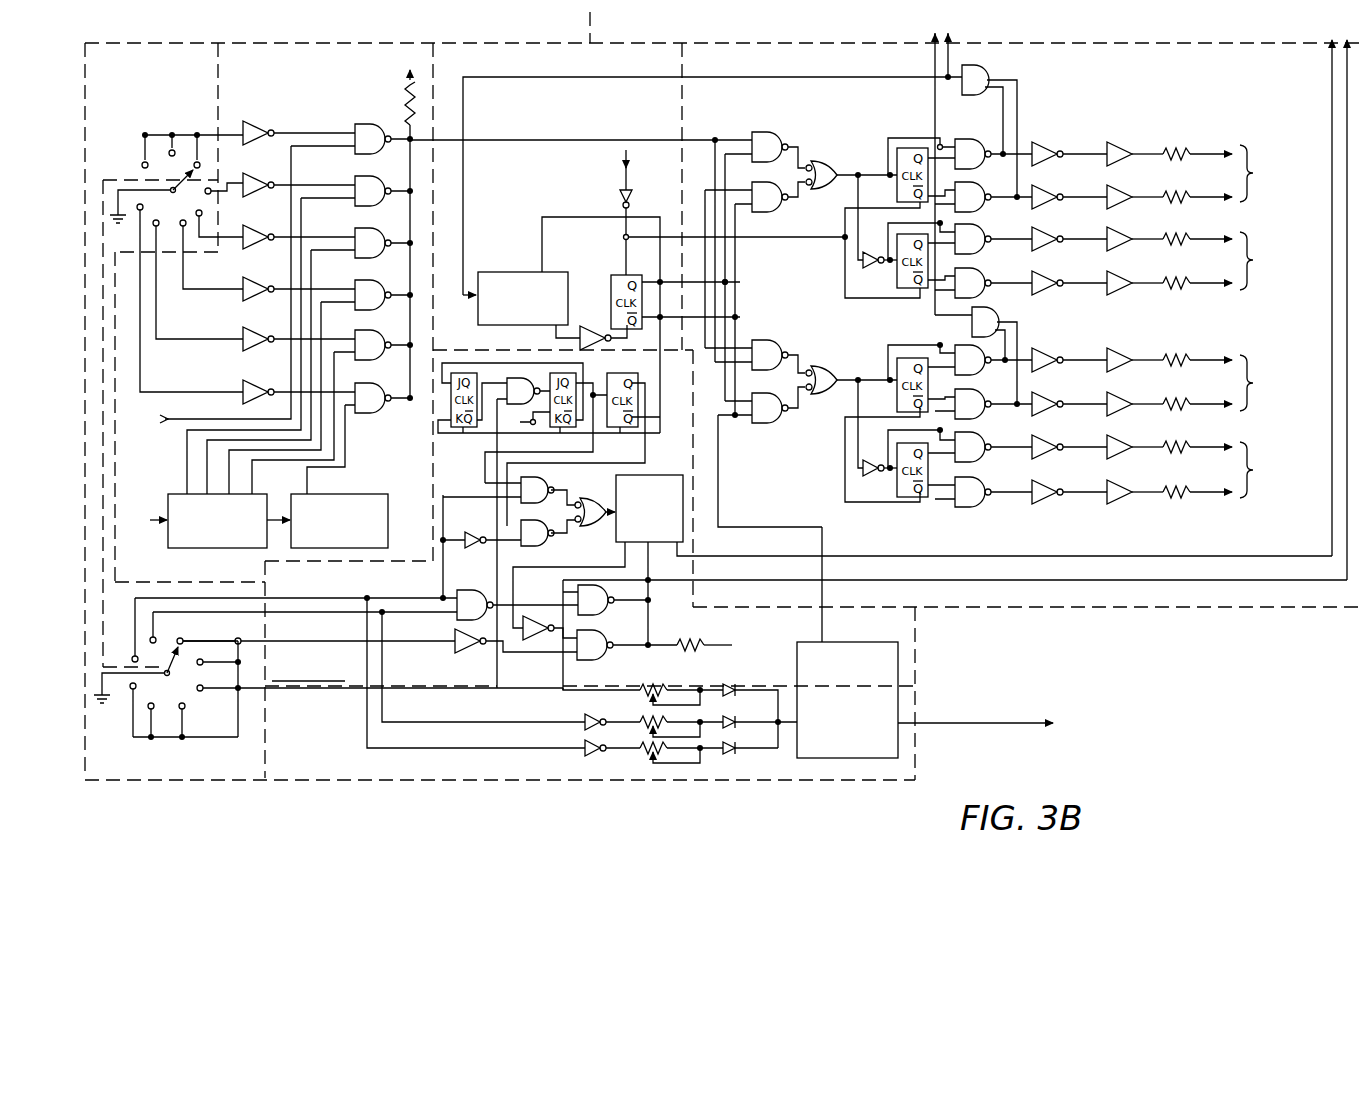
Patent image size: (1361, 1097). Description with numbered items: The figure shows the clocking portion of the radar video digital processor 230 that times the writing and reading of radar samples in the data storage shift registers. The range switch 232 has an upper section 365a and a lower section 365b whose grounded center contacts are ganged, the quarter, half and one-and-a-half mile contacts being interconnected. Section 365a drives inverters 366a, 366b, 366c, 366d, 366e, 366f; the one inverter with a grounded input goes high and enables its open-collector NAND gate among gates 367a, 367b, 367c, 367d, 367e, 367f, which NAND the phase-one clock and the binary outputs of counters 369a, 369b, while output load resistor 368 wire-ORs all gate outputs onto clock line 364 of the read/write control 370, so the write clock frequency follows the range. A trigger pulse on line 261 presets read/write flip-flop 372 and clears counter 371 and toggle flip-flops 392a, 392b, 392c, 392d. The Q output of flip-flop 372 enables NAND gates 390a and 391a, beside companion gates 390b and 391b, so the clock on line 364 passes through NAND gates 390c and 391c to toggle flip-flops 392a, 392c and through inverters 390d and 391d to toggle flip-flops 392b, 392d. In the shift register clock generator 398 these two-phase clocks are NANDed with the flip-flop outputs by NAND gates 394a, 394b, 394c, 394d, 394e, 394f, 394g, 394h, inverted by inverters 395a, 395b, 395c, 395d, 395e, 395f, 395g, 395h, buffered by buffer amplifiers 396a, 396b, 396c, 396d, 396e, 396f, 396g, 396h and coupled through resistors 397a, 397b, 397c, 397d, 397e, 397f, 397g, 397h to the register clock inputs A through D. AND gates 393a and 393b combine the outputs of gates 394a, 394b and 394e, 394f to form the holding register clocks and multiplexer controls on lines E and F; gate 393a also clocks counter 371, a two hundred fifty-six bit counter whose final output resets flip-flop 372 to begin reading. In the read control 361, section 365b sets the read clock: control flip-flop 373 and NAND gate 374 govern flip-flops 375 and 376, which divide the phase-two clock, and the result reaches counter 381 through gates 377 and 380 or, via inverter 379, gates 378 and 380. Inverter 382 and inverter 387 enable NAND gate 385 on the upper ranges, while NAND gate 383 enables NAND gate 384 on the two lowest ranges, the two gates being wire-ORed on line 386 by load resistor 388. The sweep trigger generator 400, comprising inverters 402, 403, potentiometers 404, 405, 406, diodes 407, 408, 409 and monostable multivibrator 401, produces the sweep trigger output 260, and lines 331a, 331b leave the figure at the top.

The range switch 232 is at (150, 785).
The radar video digital processor 230 is at (655, 783).
The read control 361 is at (590, 666).
The sweep trigger generator 400 is at (312, 776).
The upper section of range switch 365a is at (145, 152).
The lower section of range switch 365b is at (121, 704).
The inverter 366a is at (262, 124).
The inverter 366b is at (266, 164).
The inverter 366c is at (266, 219).
The inverter 366d is at (266, 270).
The inverter 366e is at (266, 322).
The inverter 366f is at (266, 375).
The NAND gate 367a is at (386, 126).
The NAND gate 367b is at (386, 180).
The NAND gate 367c is at (386, 232).
The NAND gate 367d is at (386, 284).
The NAND gate 367e is at (386, 334).
The NAND gate 367f is at (386, 387).
The output load resistor 368 is at (406, 100).
The counter 369a is at (168, 532).
The counter 369b is at (341, 501).
The read/write control 370 is at (582, 125).
The clock line 364 is at (483, 141).
The line 261 is at (620, 163).
The line 386 is at (700, 205).
The counter 371 is at (510, 270).
The read/write flip-flop 372 is at (612, 272).
The flip-flop 375 is at (583, 330).
The control flip-flop 373 is at (545, 423).
The NAND gate 374 is at (522, 378).
The flip-flop 376 is at (612, 374).
The gate 377 is at (550, 489).
The gate 378 is at (552, 542).
The inverter 379 is at (470, 550).
The gate 380 is at (595, 506).
The counter 381 is at (676, 475).
The inverter 382 is at (456, 662).
The NAND gate 383 is at (455, 620).
The NAND gate 384 is at (603, 585).
The NAND gate 385 is at (600, 632).
The inverter 387 is at (536, 650).
The load resistor 388 is at (692, 640).
The NAND gate 390a is at (765, 132).
The NAND gate 390b is at (772, 211).
The NAND gate 390c is at (822, 190).
The inverter 390d is at (870, 268).
The NAND gate 391a is at (775, 331).
The NAND gate 391b is at (765, 426).
The NAND gate 391c is at (822, 394).
The inverter 391d is at (870, 474).
The toggle flip-flop 392a is at (912, 148).
The toggle flip-flop 392b is at (913, 288).
The toggle flip-flop 392c is at (897, 366).
The toggle flip-flop 392d is at (919, 493).
The AND gate 393a is at (974, 95).
The AND gate 393b is at (972, 327).
The NAND gate 394a is at (976, 165).
The NAND gate 394b is at (990, 205).
The NAND gate 394c is at (980, 228).
The NAND gate 394d is at (978, 273).
The NAND gate 394e is at (978, 370).
The NAND gate 394f is at (978, 414).
The NAND gate 394g is at (980, 457).
The NAND gate 394h is at (980, 501).
The inverter 395a is at (1046, 160).
The inverter 395b is at (1044, 203).
The inverter 395c is at (1044, 247).
The inverter 395d is at (1044, 292).
The inverter 395e is at (1046, 366).
The inverter 395f is at (1046, 411).
The inverter 395g is at (1046, 454).
The inverter 395h is at (1046, 498).
The buffer amplifier 396a is at (1118, 160).
The buffer amplifier 396b is at (1119, 203).
The buffer amplifier 396c is at (1119, 247).
The buffer amplifier 396d is at (1119, 292).
The buffer amplifier 396e is at (1119, 366).
The buffer amplifier 396f is at (1119, 411).
The buffer amplifier 396g is at (1119, 454).
The buffer amplifier 396h is at (1119, 498).
The resistor 397a is at (1182, 160).
The resistor 397b is at (1183, 203).
The resistor 397c is at (1182, 244).
The resistor 397d is at (1183, 289).
The resistor 397e is at (1183, 365).
The resistor 397f is at (1183, 409).
The resistor 397g is at (1183, 452).
The resistor 397h is at (1183, 497).
The shift register clock generator 398 is at (1301, 156).
The line 331a is at (1332, 60).
The line 331b is at (1347, 82).
The monostable multivibrator 401 is at (872, 641).
The inverter 402 is at (590, 718).
The inverter 403 is at (586, 745).
The potentiometer 404 is at (645, 690).
The potentiometer 405 is at (646, 720).
The potentiometer 406 is at (647, 747).
The diode 407 is at (733, 680).
The diode 408 is at (733, 728).
The diode 409 is at (733, 754).
The sweep trigger output 260 is at (1032, 720).